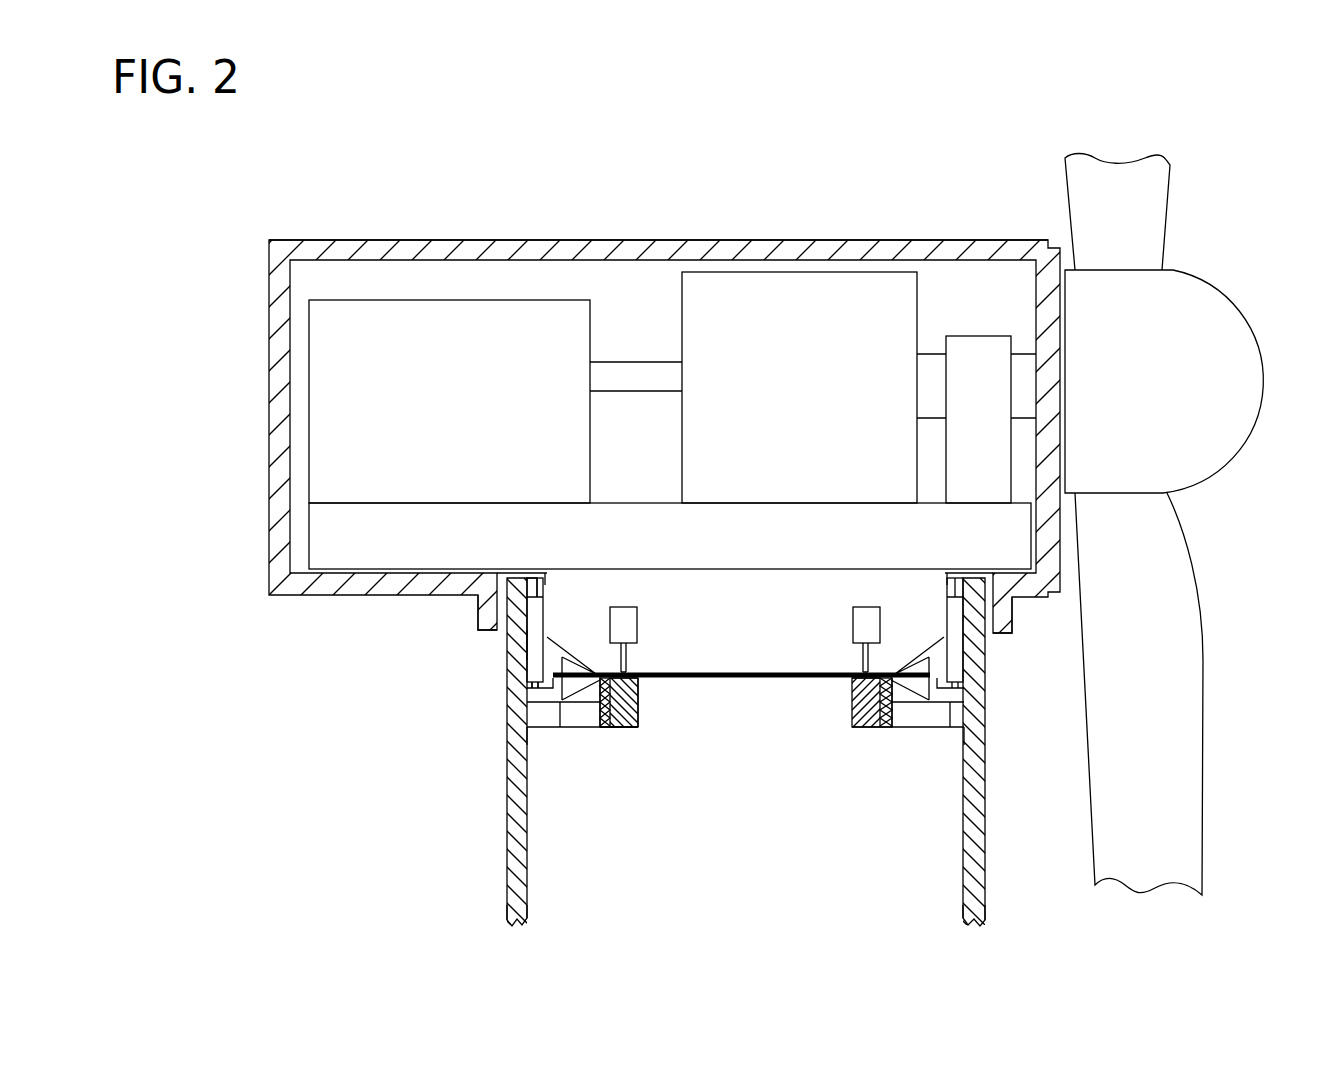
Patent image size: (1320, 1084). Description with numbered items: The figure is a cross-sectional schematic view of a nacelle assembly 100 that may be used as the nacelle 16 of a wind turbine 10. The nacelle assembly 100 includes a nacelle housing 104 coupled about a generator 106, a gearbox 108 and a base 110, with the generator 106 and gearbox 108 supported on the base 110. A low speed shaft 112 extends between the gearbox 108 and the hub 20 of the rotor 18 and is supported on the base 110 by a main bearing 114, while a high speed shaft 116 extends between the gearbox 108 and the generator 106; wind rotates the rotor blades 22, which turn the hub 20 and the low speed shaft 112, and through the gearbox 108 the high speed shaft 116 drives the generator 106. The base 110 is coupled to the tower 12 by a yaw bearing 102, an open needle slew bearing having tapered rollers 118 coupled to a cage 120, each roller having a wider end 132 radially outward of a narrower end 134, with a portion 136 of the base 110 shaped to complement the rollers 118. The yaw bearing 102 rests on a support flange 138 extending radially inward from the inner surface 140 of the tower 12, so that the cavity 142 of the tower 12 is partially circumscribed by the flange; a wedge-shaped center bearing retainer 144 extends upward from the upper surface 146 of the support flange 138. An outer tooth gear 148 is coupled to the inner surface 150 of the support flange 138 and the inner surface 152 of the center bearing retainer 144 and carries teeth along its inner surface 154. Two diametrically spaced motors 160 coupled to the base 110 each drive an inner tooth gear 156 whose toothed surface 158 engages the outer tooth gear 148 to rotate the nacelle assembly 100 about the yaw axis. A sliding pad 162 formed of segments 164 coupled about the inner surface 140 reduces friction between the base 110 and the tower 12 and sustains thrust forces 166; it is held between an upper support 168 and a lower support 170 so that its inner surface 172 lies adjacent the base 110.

The wind turbine 10 is at (222, 183).
The tower 12 is at (985, 877).
The nacelle 16 is at (391, 228).
The rotor 18 is at (1021, 305).
The hub 20 is at (1202, 318).
The rotor blades 22 is at (1150, 191).
The nacelle assembly 100 is at (372, 698).
The yaw bearing 102 is at (765, 740).
The nacelle housing 104 is at (765, 248).
The generator 106 is at (450, 418).
The gearbox 108 is at (827, 402).
The base 110 is at (737, 562).
The low speed shaft 112 is at (932, 355).
The main bearing 114 is at (1002, 423).
The high speed shaft 116 is at (621, 365).
The rollers 118 is at (560, 700).
The cage 120 is at (753, 678).
The wider end 132 is at (945, 670).
The narrower end 134 is at (853, 727).
The portion of base 136 is at (580, 660).
The support flange 138 is at (540, 728).
The inner surface 140 is at (527, 895).
The cavity 142 is at (763, 932).
The center bearing retainer 144 is at (612, 728).
The upper surface 146 is at (527, 723).
The outer tooth gear 148 is at (634, 673).
The inner surface 150 is at (606, 727).
The inner surface 152 is at (643, 697).
The inner surface 154 is at (638, 712).
The inner tooth gear 156 is at (640, 727).
The surface 158 is at (640, 725).
The motor 160 is at (622, 607).
The sliding pad 162 is at (530, 614).
The segments 164 is at (510, 643).
The thrust forces 166 is at (722, 625).
The upper support 168 is at (532, 578).
The lower support 170 is at (532, 687).
The inner surface 172 is at (545, 598).